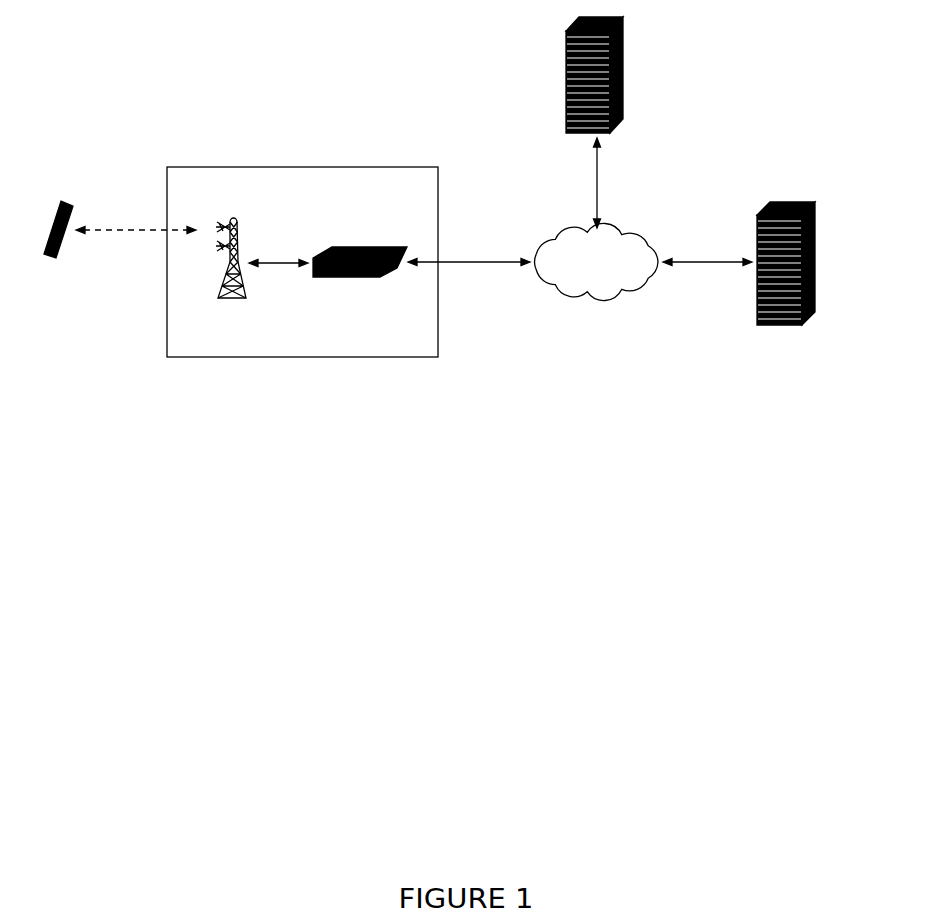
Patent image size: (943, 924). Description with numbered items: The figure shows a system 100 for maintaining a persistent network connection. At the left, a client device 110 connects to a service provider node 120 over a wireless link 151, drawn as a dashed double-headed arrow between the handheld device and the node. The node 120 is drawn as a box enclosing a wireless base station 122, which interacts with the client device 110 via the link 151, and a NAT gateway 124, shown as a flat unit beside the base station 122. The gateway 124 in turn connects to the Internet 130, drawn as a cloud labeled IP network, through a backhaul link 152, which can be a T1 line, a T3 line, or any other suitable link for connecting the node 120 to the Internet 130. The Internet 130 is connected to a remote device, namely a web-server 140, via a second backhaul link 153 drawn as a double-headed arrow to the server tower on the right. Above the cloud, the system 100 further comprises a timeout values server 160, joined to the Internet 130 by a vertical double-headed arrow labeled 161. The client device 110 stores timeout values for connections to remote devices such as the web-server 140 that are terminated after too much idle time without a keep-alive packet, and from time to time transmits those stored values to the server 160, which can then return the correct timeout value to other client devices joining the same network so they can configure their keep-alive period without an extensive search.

The system 100 is at (272, 481).
The client device 110 is at (58, 256).
The service provider node 120 is at (387, 166).
The wireless base station 122 is at (245, 296).
The NAT gateway 124 is at (388, 246).
The Internet 130 is at (597, 293).
The web-server 140 is at (789, 205).
The wireless link 151 is at (136, 229).
The backhaul link 152 is at (485, 264).
The second backhaul link 153 is at (722, 261).
The timeout values server 160 is at (567, 88).
The server link 161 is at (596, 200).